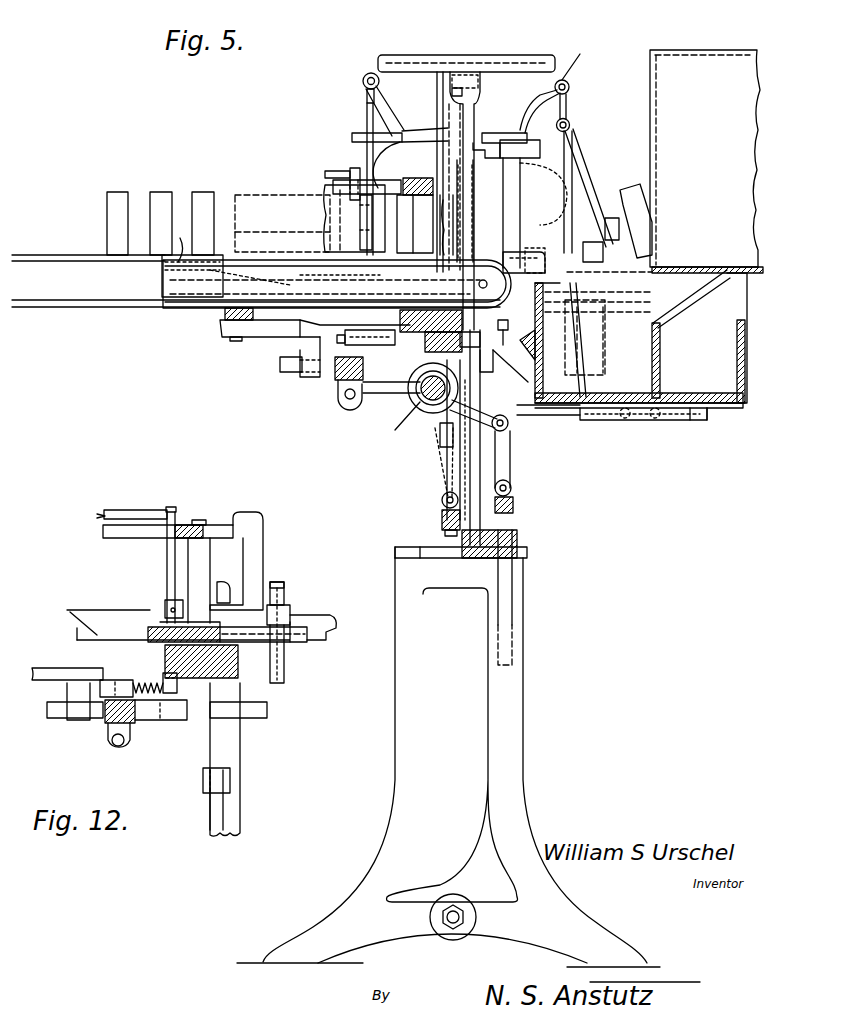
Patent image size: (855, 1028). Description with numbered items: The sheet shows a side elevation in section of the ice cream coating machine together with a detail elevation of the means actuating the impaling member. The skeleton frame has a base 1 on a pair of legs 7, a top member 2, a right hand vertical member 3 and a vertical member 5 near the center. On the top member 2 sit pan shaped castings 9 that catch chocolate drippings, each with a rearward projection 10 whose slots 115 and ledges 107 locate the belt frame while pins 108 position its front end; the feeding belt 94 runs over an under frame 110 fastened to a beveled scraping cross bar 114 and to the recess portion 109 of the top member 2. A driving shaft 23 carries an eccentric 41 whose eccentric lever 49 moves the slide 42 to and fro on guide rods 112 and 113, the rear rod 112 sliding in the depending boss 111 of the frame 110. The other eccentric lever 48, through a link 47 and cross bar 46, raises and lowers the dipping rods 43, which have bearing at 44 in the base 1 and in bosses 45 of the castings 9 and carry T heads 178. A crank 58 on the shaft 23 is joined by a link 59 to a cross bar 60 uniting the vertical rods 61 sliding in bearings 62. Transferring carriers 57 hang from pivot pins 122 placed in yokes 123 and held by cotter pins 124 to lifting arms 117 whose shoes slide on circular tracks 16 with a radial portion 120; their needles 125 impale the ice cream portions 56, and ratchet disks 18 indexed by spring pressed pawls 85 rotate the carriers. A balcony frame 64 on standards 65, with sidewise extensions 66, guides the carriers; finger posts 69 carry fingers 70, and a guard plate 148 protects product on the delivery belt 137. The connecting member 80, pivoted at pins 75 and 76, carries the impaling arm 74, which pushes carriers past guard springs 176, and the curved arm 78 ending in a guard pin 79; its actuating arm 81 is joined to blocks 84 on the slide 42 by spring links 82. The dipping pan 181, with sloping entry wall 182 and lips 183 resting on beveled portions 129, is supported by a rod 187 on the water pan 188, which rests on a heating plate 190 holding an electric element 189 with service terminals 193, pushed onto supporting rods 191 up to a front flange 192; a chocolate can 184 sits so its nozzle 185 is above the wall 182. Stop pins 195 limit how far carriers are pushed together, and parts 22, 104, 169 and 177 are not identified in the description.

In FIG. 5, the base 1 is at (408, 550).
In FIG. 12, the top member 2 is at (238, 668).
In FIG. 5, the right hand vertical member 3 is at (448, 922).
In FIG. 5, the vertical member 5 is at (470, 478).
In FIG. 12, the vertical member 5 is at (240, 750).
In FIG. 5, the legs 7 is at (424, 636).
In FIG. 12, the pan shaped castings 9 is at (319, 627).
In FIG. 5, the rearward projection 10 is at (190, 292).
In FIG. 5, the circular tracks 16 is at (351, 137).
In FIG. 5, the ratchet disks 18 is at (514, 329).
In FIG. 5, the top cross bar 22 is at (503, 60).
In FIG. 5, the driving shaft 23 is at (399, 421).
In FIG. 5, the eccentric 41 is at (408, 400).
In FIG. 5, the slide 42 is at (335, 380).
In FIG. 12, the slide 42 is at (105, 722).
In FIG. 5, the vertically movable rods 43 is at (521, 230).
In FIG. 5, the bearing 44 is at (520, 548).
In FIG. 5, the bosses 45 is at (524, 256).
In FIG. 12, the bosses 45 is at (284, 582).
In FIG. 5, the cross bar 46 is at (514, 503).
In FIG. 5, the link 47 is at (512, 450).
In FIG. 5, the eccentric lever 48 is at (498, 416).
In FIG. 5, the eccentric lever 49 is at (390, 392).
In FIG. 5, the ice cream portions 56 is at (203, 194).
In FIG. 5, the transferring carriers 57 is at (367, 113).
In FIG. 5, the crank 58 is at (472, 333).
In FIG. 5, the link 59 is at (450, 458).
In FIG. 5, the cross bar 60 is at (442, 512).
In FIG. 5, the vertical rods 61 is at (449, 146).
In FIG. 12, the vertical rods 61 is at (230, 592).
In FIG. 5, the bearings 62 is at (440, 440).
In FIG. 12, the bearings 62 is at (290, 612).
In FIG. 5, the balcony frame 64 is at (400, 196).
In FIG. 12, the balcony frame 64 is at (200, 520).
In FIG. 5, the standards 65 is at (448, 219).
In FIG. 5, the sidewise extensions 66 is at (333, 187).
In FIG. 12, the sidewise extensions 66 is at (106, 534).
In FIG. 5, the finger posts 69 is at (325, 208).
In FIG. 5, the fingers 70 is at (372, 230).
In FIG. 12, the impaling arm 74 is at (262, 548).
In FIG. 12, the pivot pin 75 is at (165, 600).
In FIG. 12, the pivot pin 76 is at (172, 508).
In FIG. 5, the curved arm 78 is at (353, 168).
In FIG. 12, the curved arm 78 is at (133, 511).
In FIG. 5, the guard pin 79 is at (331, 167).
In FIG. 12, the guard pin 79 is at (89, 512).
In FIG. 5, the vertical connecting member 80 is at (415, 224).
In FIG. 12, the vertical connecting member 80 is at (167, 572).
In FIG. 12, the actuating arm 81 is at (180, 673).
In FIG. 12, the spring links 82 is at (140, 683).
In FIG. 12, the blocks 84 is at (112, 680).
In FIG. 5, the spring pressed pawls 85 is at (366, 325).
In FIG. 5, the feeding belt 94 is at (210, 268).
In FIG. 5, the link 104 is at (513, 364).
In FIG. 5, the ledges 107 is at (186, 243).
In FIG. 5, the pins 108 is at (425, 275).
In FIG. 5, the recess portion 109 is at (417, 329).
In FIG. 12, the recess portion 109 is at (165, 660).
In FIG. 5, the under frame 110 is at (280, 328).
In FIG. 12, the under frame 110 is at (52, 670).
In FIG. 5, the depending boss 111 is at (305, 348).
In FIG. 12, the depending boss 111 is at (68, 692).
In FIG. 5, the rear guide rod 112 is at (280, 366).
In FIG. 12, the rear guide rod 112 is at (47, 712).
In FIG. 5, the forward guide rod 113 is at (490, 369).
In FIG. 12, the forward guide rod 113 is at (267, 710).
In FIG. 5, the cross bar 114 is at (222, 325).
In FIG. 5, the slots 115 is at (163, 274).
In FIG. 5, the lifting arm 117 is at (535, 108).
In FIG. 5, the radial portion 120 is at (400, 143).
In FIG. 5, the pivot pin 122 is at (364, 82).
In FIG. 5, the yoke 123 is at (478, 100).
In FIG. 5, the cotter pin 124 is at (577, 63).
In FIG. 5, the needles 125 is at (618, 229).
In FIG. 5, the beveled portions 129 is at (517, 339).
In FIG. 12, the beveled portions 129 is at (310, 640).
In FIG. 5, the delivery belt 137 is at (50, 262).
In FIG. 5, the guard plate 148 is at (282, 223).
In FIG. 5, the rod 169 is at (440, 74).
In FIG. 5, the guard springs 176 is at (500, 130).
In FIG. 5, the bracket 177 is at (488, 158).
In FIG. 5, the T heads 178 is at (534, 182).
In FIG. 5, the dipping pan 181 is at (660, 366).
In FIG. 5, the sloping entry wall 182 is at (688, 305).
In FIG. 5, the overhanging lips 183 is at (546, 255).
In FIG. 5, the chocolate can 184 is at (656, 185).
In FIG. 5, the nozzle 185 is at (686, 268).
In FIG. 5, the rod 187 is at (732, 297).
In FIG. 5, the water pan 188 is at (728, 406).
In FIG. 5, the electric element 189 is at (676, 420).
In FIG. 5, the electric heating plate 190 is at (607, 420).
In FIG. 5, the supporting rods 191 is at (565, 418).
In FIG. 5, the front flange 192 is at (705, 425).
In FIG. 5, the service terminals 193 is at (625, 420).
In FIG. 5, the stop pins 195 is at (478, 200).